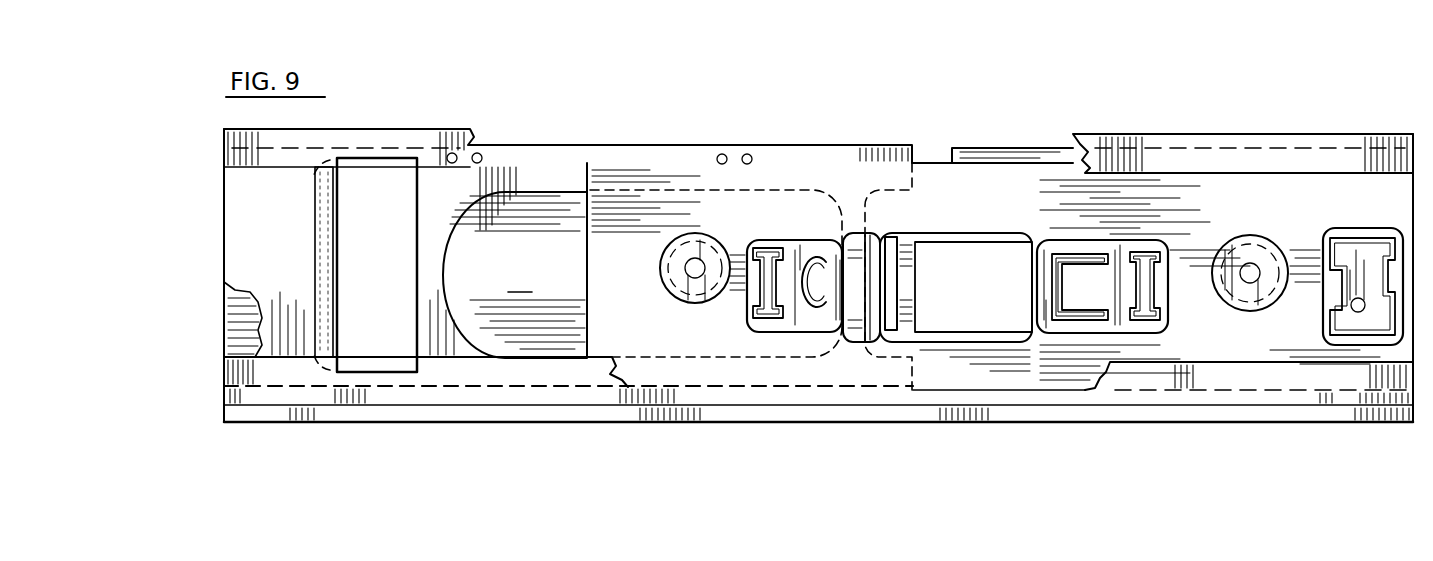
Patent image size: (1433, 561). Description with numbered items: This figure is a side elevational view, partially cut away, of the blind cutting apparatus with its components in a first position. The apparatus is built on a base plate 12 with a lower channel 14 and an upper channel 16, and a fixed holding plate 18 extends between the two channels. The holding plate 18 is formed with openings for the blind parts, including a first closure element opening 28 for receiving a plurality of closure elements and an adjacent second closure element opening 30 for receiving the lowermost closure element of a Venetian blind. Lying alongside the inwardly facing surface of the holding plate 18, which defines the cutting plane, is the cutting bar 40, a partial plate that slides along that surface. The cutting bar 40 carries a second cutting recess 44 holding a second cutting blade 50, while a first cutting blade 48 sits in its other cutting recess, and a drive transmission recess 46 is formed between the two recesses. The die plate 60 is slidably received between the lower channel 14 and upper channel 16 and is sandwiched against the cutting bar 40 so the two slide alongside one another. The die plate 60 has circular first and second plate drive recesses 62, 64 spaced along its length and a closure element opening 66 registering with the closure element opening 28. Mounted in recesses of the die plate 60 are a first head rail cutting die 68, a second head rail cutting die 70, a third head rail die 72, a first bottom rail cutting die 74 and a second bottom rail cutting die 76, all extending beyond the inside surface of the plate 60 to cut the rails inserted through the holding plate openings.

The base plate 12 is at (382, 410).
The lower channel 14 is at (1232, 382).
The upper channel 16 is at (1159, 134).
The holding plate 18 is at (237, 321).
The first closure element opening 28 is at (944, 318).
The second closure element opening 30 is at (900, 332).
The cutting bar 40 is at (248, 223).
The second cutting recess 44 is at (390, 182).
The drive transmission recess 46 is at (538, 235).
The first cutting blade 48 is at (875, 277).
The second cutting blade 50 is at (327, 320).
The die plate 60 is at (986, 185).
The first plate drive recess 62 is at (1237, 235).
The second plate drive recess 64 is at (658, 262).
The closure element opening 66 is at (1010, 233).
The first head rail cutting die 68 is at (1322, 230).
The second head rail cutting die 70 is at (1148, 333).
The third head rail die 72 is at (1072, 333).
The first bottom rail cutting die 74 is at (803, 240).
The second bottom rail cutting die 76 is at (765, 245).